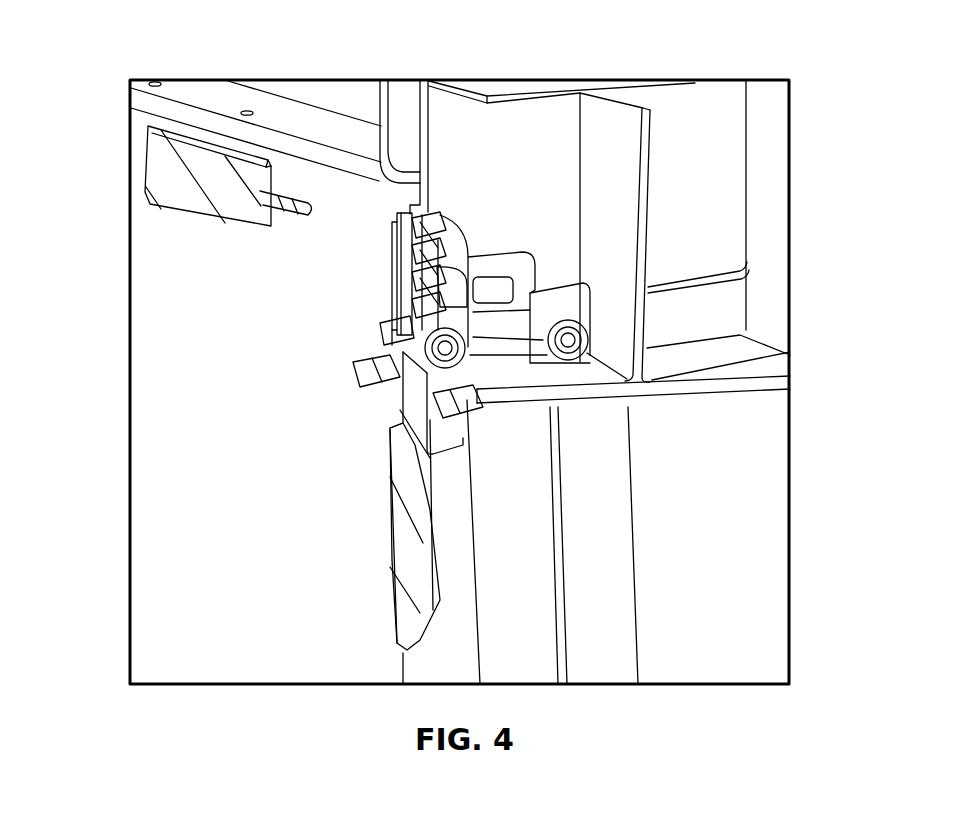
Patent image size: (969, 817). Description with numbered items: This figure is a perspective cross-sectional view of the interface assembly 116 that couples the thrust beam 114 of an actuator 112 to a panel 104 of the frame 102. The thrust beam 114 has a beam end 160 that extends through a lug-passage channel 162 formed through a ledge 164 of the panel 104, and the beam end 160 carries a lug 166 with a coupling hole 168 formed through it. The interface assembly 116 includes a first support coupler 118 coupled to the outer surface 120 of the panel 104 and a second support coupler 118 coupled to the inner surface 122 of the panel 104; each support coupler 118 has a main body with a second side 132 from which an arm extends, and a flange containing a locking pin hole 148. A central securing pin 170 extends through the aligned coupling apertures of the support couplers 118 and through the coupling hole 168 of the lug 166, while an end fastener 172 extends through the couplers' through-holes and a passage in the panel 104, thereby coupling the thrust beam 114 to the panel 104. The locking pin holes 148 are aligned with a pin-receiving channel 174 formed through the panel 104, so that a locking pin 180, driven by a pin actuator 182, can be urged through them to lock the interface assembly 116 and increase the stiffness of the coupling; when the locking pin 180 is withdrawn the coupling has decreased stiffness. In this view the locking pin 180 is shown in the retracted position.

The frame 102 is at (494, 86).
The panel 104 is at (667, 338).
The actuator 112 is at (393, 640).
The thrust beam 114 is at (392, 577).
The interface assembly 116 is at (364, 293).
The support coupler 118 is at (393, 272).
The outer surface 120 is at (478, 160).
The inner surface 122 is at (385, 193).
The second side 132 is at (495, 356).
The locking pin hole 148 is at (463, 248).
The beam end 160 is at (412, 408).
The lug-passage channel 162 is at (396, 391).
The ledge 164 is at (495, 370).
The lug 166 is at (372, 352).
The coupling hole 168 is at (410, 326).
The central securing pin 170 is at (403, 330).
The end fastener 172 is at (573, 352).
The pin-receiving channel 174 is at (402, 262).
The locking pin 180 is at (292, 198).
The pin actuator 182 is at (161, 163).